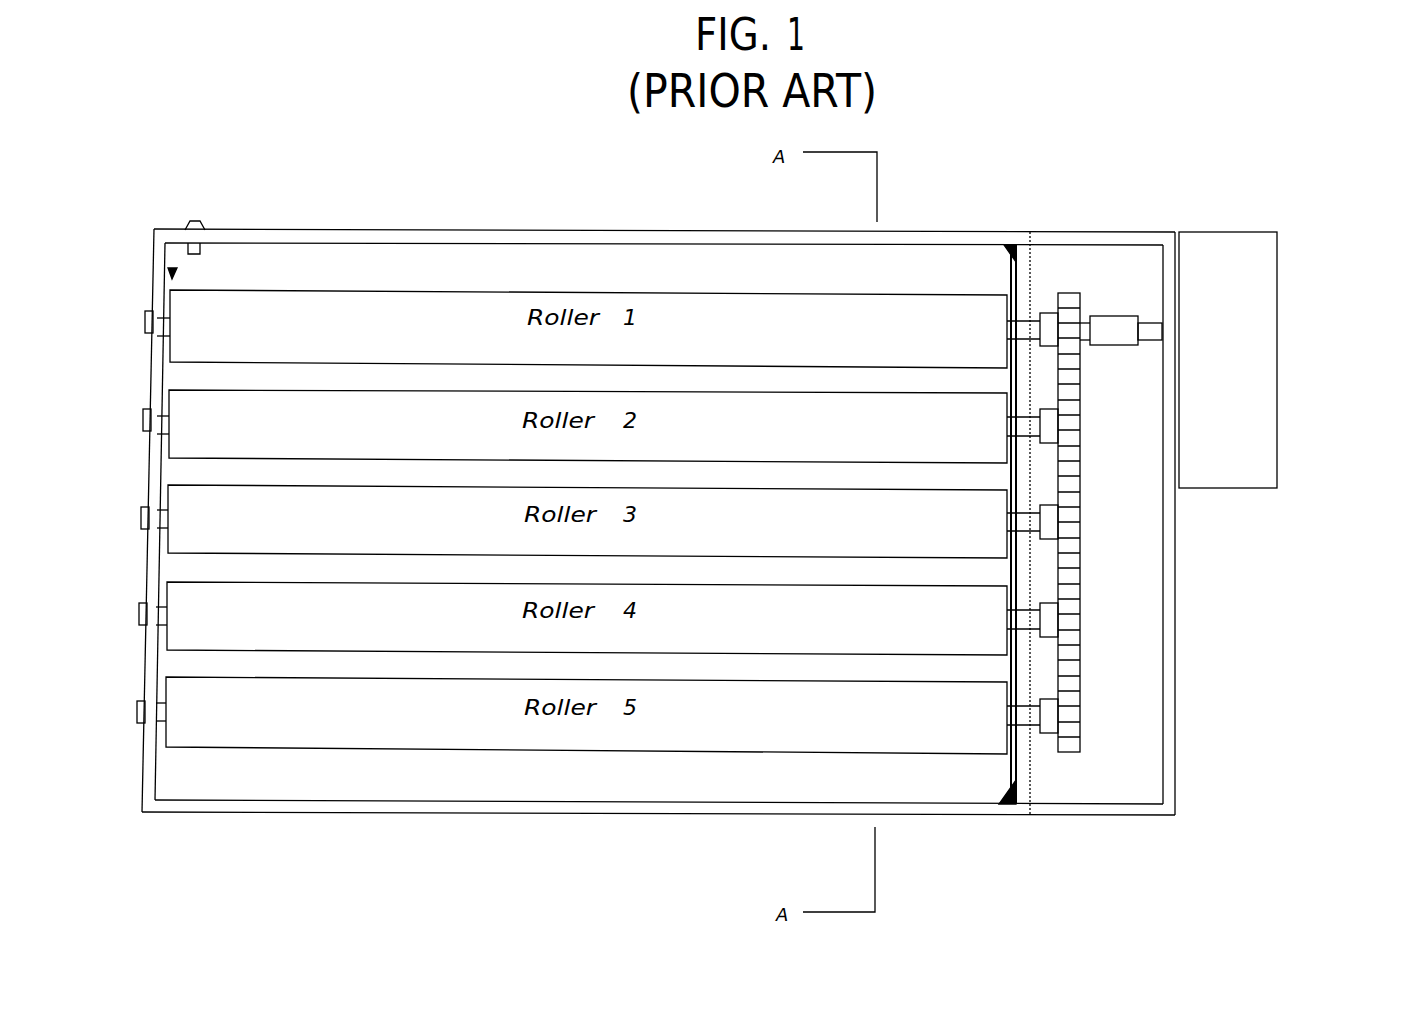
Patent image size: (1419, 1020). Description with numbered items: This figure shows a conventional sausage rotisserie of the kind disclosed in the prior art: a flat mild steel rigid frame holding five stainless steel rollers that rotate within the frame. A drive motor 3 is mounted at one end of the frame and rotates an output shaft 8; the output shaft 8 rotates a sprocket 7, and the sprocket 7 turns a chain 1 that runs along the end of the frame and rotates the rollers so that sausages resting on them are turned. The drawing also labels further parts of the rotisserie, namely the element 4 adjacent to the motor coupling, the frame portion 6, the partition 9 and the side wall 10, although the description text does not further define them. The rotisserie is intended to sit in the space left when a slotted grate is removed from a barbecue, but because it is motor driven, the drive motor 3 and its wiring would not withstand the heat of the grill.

The chain 1 is at (1075, 757).
The drive motor 3 is at (1289, 360).
The drive shaft 4 is at (1115, 350).
The frame housing 6 is at (688, 823).
The sprocket 7 is at (1053, 315).
The output shaft 8 is at (1150, 316).
The divider wall 9 is at (987, 822).
The side wall 10 is at (135, 770).